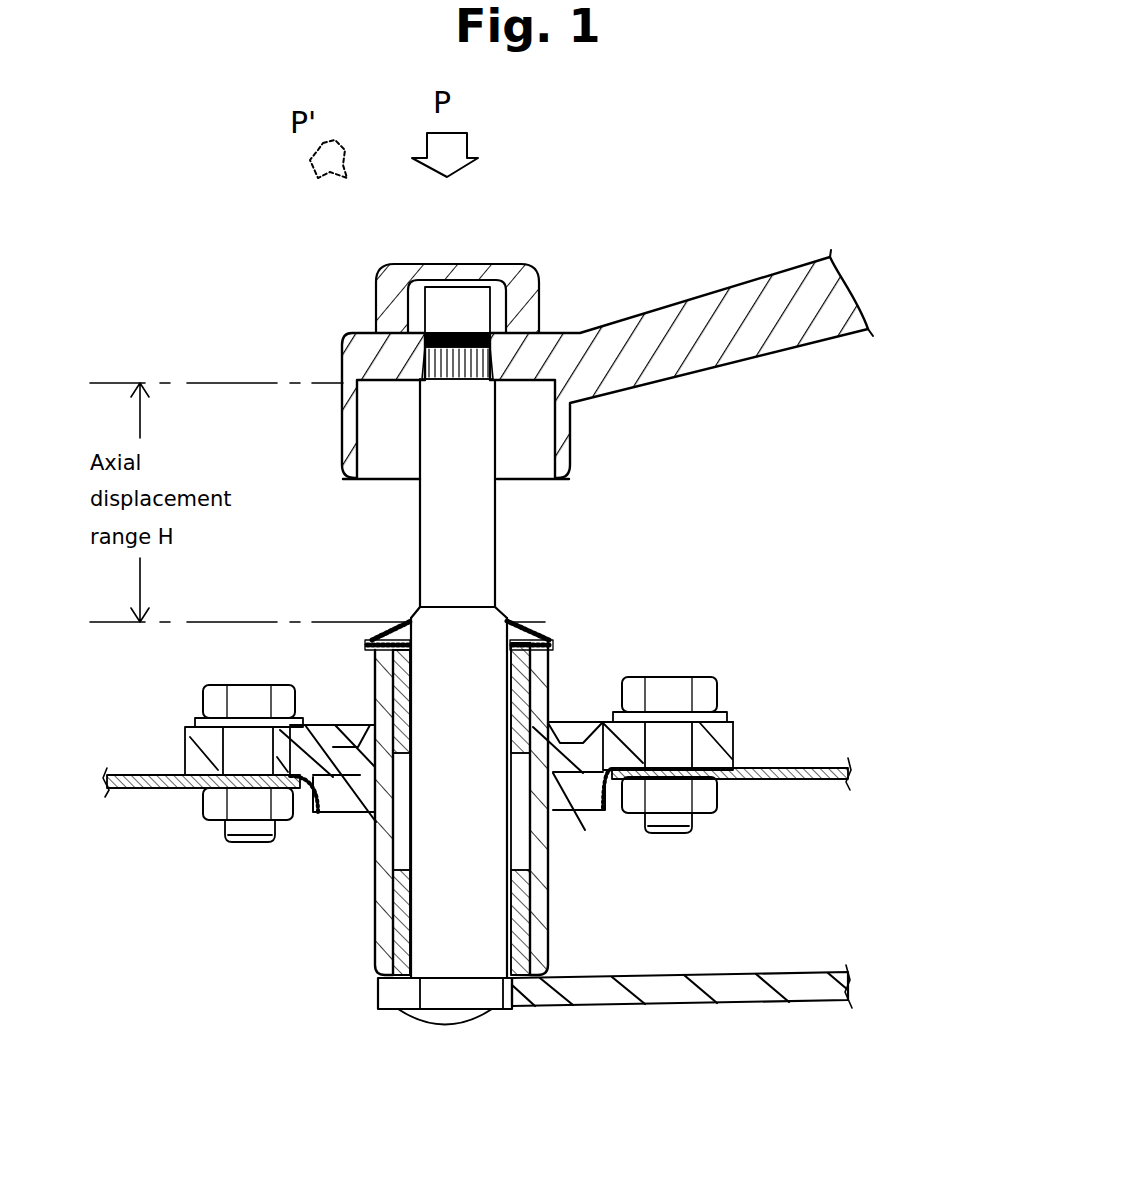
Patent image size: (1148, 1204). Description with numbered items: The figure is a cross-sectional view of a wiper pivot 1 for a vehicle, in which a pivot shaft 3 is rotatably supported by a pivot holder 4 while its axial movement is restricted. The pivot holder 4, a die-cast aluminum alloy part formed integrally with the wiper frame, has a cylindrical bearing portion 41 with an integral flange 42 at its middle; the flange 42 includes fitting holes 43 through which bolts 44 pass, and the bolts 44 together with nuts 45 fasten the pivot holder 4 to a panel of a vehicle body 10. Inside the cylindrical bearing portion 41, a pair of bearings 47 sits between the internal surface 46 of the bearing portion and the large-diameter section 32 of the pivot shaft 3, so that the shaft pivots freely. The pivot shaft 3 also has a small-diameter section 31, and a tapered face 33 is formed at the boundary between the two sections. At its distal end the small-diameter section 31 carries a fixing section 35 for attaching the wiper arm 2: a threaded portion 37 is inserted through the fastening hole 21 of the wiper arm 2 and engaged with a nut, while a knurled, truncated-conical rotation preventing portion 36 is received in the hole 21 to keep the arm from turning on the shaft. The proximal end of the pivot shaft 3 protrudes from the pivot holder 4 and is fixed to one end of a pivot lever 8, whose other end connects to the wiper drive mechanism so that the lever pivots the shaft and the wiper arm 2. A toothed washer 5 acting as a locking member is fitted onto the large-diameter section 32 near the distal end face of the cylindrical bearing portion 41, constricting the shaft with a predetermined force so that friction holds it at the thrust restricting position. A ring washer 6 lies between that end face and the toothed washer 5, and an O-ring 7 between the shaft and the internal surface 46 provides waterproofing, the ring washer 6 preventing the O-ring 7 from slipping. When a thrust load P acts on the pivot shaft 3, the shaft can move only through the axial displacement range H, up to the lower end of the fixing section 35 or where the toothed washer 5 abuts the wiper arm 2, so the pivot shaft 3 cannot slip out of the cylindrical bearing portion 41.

The wiper pivot 1 is at (805, 160).
The wiper arm 2 is at (733, 280).
The fastening hole 21 is at (537, 377).
The pivot shaft 3 is at (457, 937).
The small-diameter section 31 is at (437, 540).
The large-diameter section 32 is at (433, 850).
The tapered face 33 is at (460, 607).
The fixing section 35 is at (371, 311).
The rotation preventing portion 36 is at (420, 352).
The threaded portion 37 is at (397, 268).
The pivot holder 4 is at (506, 741).
The cylindrical bearing portion 41 is at (575, 740).
The flange 42 is at (602, 720).
The fitting holes 43 is at (190, 745).
The bolts 44 is at (240, 700).
The nuts 45 is at (205, 812).
The internal surface 46 is at (518, 847).
The bearings 47 is at (395, 703).
The toothed washer 5 is at (385, 637).
The ring washer 6 is at (368, 646).
The O-ring 7 is at (523, 640).
The pivot lever 8 is at (650, 1003).
The panel of a vehicle body 10 is at (780, 767).